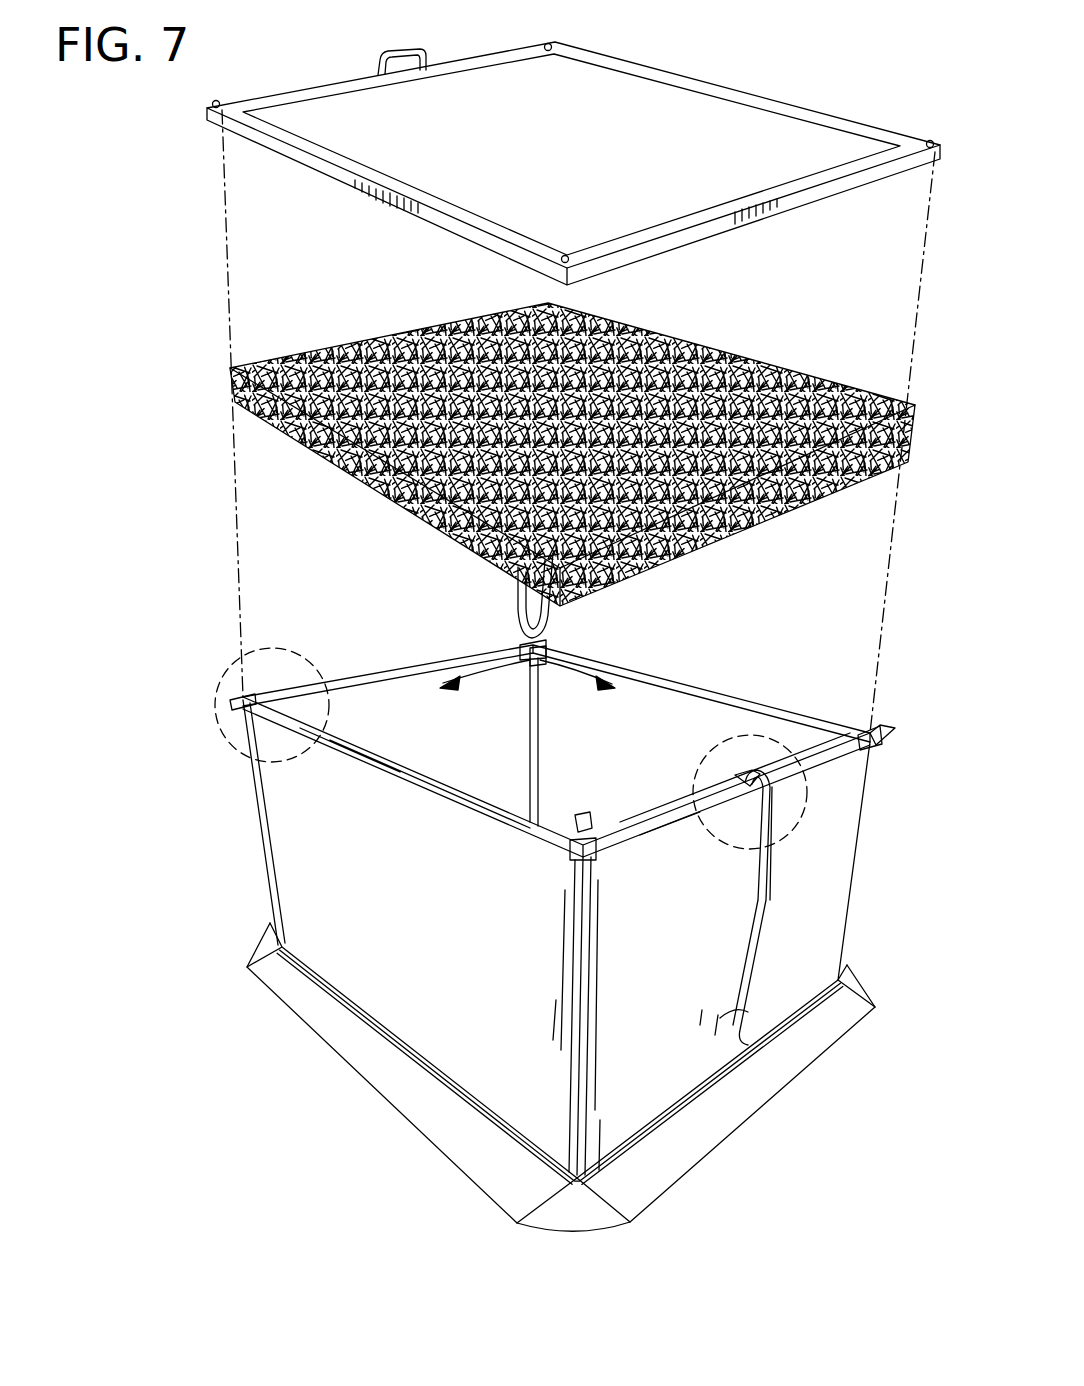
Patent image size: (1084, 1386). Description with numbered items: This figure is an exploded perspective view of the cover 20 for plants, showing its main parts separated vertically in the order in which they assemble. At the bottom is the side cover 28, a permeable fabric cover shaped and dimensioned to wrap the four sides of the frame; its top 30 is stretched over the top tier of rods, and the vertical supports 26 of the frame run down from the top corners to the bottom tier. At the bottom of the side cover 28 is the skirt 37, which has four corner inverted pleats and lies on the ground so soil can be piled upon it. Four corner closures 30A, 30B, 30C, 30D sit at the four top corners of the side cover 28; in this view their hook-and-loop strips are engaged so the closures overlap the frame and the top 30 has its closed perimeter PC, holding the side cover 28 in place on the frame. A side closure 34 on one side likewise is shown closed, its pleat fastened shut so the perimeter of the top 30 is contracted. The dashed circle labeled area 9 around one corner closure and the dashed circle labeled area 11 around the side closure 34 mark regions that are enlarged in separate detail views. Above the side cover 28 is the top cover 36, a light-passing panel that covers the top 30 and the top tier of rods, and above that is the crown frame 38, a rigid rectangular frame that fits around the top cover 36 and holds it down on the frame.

The crown frame 38 is at (652, 75).
The cover 20 is at (808, 74).
The top cover 36 is at (742, 357).
The area 9 is at (292, 652).
The top 30 is at (700, 700).
The corner closure 30A is at (243, 697).
The corner closure 30B is at (575, 856).
The corner closure 30C is at (872, 735).
The corner closure 30D is at (540, 648).
The closed perimeter PC is at (513, 667).
The vertical support 26 is at (535, 788).
The side cover 28 is at (342, 835).
The side closure 34 is at (758, 778).
The area 11 is at (795, 828).
The skirt 37 is at (380, 1063).